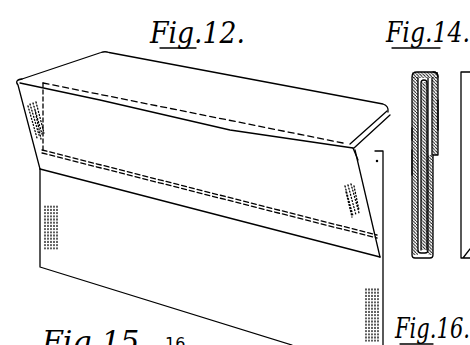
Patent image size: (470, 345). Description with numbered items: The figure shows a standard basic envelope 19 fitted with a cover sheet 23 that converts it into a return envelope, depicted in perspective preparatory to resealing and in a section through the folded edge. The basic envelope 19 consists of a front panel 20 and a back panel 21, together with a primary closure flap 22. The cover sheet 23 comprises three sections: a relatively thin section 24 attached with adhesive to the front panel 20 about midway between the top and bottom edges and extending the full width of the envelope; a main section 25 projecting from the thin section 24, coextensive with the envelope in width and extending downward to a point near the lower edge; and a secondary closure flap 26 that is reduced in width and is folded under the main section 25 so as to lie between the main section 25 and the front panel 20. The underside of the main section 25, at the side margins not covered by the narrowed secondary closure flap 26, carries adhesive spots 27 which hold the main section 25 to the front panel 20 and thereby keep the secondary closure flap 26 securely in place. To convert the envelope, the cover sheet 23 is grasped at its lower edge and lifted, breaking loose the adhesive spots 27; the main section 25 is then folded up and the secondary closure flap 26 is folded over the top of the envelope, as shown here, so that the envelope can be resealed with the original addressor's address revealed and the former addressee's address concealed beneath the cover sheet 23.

In FIG. 12, the basic envelope 19 is at (94, 288).
In FIG. 12, the front panel 20 is at (378, 162).
In FIG. 14, the front panel 20 is at (418, 97).
In FIG. 14, the back panel 21 is at (429, 233).
In FIG. 14, the closure flap 22 is at (437, 76).
In FIG. 12, the cover sheet 23 is at (134, 200).
In FIG. 12, the thin section 24 is at (233, 211).
In FIG. 14, the thin section 24 is at (412, 134).
In FIG. 12, the main section 25 is at (209, 194).
In FIG. 14, the main section 25 is at (413, 80).
In FIG. 12, the secondary closure flap 26 is at (280, 91).
In FIG. 14, the secondary closure flap 26 is at (438, 112).
In FIG. 12, the adhesive spots 27 is at (45, 125).
In FIG. 14, the adhesive spots 27 is at (412, 162).